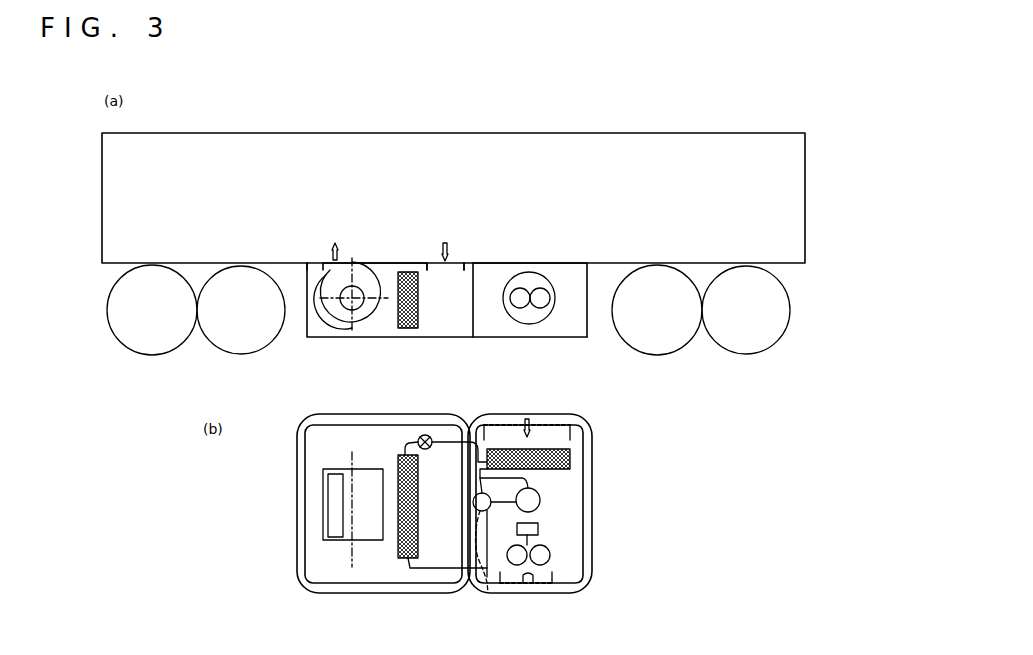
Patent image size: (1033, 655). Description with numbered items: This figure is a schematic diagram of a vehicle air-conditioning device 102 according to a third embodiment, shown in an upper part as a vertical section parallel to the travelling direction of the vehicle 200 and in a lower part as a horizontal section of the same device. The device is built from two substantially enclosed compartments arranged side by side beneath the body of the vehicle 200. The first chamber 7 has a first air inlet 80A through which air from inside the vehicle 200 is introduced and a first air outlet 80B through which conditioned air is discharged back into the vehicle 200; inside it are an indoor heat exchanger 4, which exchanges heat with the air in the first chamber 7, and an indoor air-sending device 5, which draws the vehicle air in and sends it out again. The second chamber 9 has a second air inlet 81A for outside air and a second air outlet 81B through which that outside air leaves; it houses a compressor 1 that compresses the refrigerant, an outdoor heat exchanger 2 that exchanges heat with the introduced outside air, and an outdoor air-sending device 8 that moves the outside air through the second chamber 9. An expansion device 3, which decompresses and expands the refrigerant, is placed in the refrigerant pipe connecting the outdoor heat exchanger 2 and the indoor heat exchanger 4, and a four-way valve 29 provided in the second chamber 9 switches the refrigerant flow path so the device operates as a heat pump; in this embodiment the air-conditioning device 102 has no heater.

The vehicle 200 is at (697, 162).
The first chamber 7 is at (315, 341).
The second chamber 9 is at (513, 338).
The first air inlet 80A is at (454, 267).
The first air outlet 80B is at (353, 260).
The vehicle air-conditioning device 102 is at (547, 261).
The outdoor air-sending device 8 is at (547, 307).
The indoor heat exchanger 4 is at (418, 323).
The indoor air-sending device 5 is at (368, 477).
The expansion device 3 is at (428, 438).
The outdoor heat exchanger 2 is at (572, 455).
The compressor 1 is at (541, 497).
The four-way valve 29 is at (487, 593).
The second air inlet 81A is at (540, 424).
The second air outlet 81B is at (553, 590).